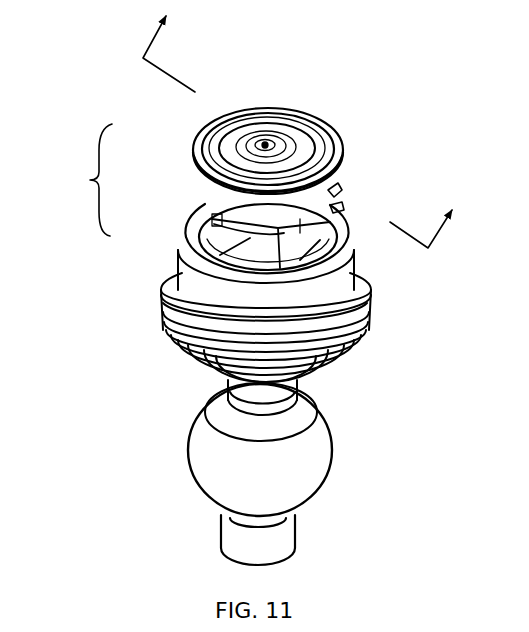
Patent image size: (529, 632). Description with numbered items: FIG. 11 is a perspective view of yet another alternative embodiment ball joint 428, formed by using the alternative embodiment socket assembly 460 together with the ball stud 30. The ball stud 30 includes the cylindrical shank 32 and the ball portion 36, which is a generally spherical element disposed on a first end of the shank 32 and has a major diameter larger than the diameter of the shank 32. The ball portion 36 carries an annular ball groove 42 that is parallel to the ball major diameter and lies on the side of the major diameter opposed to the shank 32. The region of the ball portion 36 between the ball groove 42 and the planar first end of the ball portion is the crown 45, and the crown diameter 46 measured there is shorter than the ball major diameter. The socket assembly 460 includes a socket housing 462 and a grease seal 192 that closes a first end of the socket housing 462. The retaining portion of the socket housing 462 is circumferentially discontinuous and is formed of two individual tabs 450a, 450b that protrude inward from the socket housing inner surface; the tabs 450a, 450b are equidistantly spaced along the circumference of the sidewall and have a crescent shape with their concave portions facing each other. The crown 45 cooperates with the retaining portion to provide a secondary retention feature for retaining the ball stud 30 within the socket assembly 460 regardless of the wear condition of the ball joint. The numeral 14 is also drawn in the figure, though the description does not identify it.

The direction of view / axis arrow 14 is at (316, 130).
The ball joint 428 is at (333, 88).
The crown diameter 46 is at (510, 56).
The tab 450a is at (335, 186).
The tab 450b is at (338, 206).
The socket assembly 460 is at (74, 180).
The grease seal 192 is at (195, 148).
The socket housing 462 is at (176, 256).
The crown 45 is at (211, 394).
The annular ball groove 42 is at (300, 396).
The ball stud 30 is at (198, 450).
The ball portion 36 is at (211, 456).
The cylindrical shank 32 is at (222, 543).